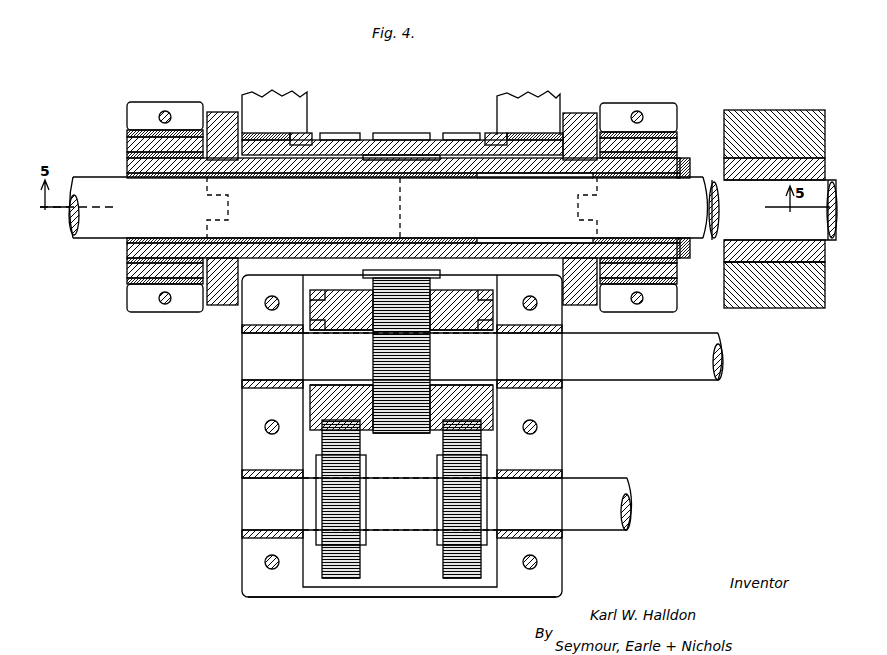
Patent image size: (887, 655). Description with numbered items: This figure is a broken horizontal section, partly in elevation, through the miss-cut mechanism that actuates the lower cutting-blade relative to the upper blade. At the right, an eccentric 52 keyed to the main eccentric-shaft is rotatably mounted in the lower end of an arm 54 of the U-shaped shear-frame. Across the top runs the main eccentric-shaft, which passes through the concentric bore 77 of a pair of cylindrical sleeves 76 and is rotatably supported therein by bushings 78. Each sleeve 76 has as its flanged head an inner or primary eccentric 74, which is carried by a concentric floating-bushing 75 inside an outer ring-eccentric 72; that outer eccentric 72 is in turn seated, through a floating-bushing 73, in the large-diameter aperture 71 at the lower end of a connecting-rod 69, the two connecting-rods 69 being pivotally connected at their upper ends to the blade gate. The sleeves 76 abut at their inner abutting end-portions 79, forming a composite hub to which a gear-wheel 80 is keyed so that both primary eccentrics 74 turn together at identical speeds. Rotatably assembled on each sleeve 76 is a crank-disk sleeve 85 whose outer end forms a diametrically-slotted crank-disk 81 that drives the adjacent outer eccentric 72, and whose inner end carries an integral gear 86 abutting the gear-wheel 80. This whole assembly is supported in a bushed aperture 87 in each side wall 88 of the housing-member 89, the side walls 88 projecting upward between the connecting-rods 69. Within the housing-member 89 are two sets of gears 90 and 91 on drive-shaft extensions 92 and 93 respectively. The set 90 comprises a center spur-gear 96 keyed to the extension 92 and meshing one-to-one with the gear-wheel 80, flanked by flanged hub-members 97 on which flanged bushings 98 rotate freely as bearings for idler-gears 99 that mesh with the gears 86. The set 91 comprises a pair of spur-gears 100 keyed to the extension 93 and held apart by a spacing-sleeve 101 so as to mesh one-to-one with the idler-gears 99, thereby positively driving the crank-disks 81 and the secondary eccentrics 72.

The eccentric 52 is at (783, 262).
The arm 54 is at (800, 120).
The connecting-rod 69 is at (132, 112).
The aperture 71 is at (127, 134).
The ring-eccentric 72 is at (127, 146).
The floating-bushing 73 is at (150, 130).
The inner eccentric 74 is at (152, 165).
The floating-bushing 75 is at (127, 156).
The cylindrical sleeve 76 is at (285, 172).
The concentric bore 77 is at (262, 176).
The bushing 78 is at (176, 176).
The inner abutting end-portion 79 is at (400, 162).
The gear-wheel 80 is at (400, 140).
The crank-disk 81 is at (224, 112).
The crank-disk sleeve 85 is at (272, 133).
The gear 86 is at (340, 133).
The bushed aperture 87 is at (302, 133).
The side wall 88 is at (242, 420).
The housing-member 89 is at (402, 598).
The set of gears 90 is at (384, 433).
The set of gears 91 is at (443, 574).
The drive-shaft extension 92 is at (617, 382).
The drive-shaft extension 93 is at (605, 478).
The center spur-gear 96 is at (412, 433).
The flanged hub-member 97 is at (352, 385).
The flanged bushing 98 is at (326, 385).
The idler-gear 99 is at (318, 415).
The spur-gear 100 is at (340, 580).
The spacing-sleeve 101 is at (380, 545).